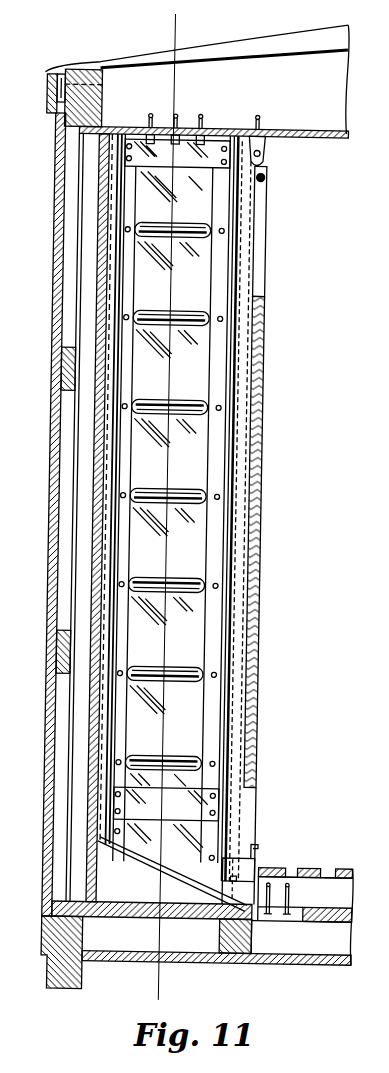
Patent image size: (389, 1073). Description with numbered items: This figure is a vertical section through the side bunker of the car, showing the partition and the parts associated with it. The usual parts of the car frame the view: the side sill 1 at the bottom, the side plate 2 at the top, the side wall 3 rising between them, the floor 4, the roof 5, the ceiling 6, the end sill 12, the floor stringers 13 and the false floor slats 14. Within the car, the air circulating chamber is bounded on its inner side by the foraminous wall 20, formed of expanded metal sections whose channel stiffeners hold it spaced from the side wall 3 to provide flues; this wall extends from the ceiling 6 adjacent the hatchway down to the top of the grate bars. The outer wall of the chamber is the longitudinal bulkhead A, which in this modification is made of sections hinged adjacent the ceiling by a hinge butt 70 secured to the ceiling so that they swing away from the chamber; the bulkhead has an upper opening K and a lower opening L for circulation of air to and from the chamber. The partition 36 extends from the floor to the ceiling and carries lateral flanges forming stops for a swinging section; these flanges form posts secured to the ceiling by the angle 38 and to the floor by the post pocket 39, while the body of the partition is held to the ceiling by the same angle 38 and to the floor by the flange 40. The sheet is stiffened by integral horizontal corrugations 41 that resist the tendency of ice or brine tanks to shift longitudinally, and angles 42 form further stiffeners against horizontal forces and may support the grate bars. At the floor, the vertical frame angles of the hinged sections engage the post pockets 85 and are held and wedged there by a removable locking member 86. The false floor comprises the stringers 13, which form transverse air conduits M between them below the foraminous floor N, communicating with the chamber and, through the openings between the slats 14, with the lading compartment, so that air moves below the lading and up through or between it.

The side sill 1 is at (76, 971).
The side plate 2 is at (65, 121).
The side wall 3 is at (72, 606).
The floor 4 is at (218, 912).
The roof 5 is at (349, 48).
The ceiling 6 is at (351, 136).
The end sill 12 is at (152, 24).
The floor stringers 13 is at (356, 895).
The false floor slats 14 is at (327, 865).
The foraminous wall 20 is at (118, 452).
The partition 36 is at (170, 504).
The angle 38 is at (186, 160).
The post pocket 39 is at (220, 879).
The flange 40 is at (164, 866).
The horizontal corrugations 41 is at (210, 682).
The angles 42 is at (166, 804).
The hinge butt 70 is at (270, 153).
The post pockets 85 is at (255, 865).
The locking member 86 is at (268, 843).
The longitudinal bulkhead A is at (269, 456).
The upper opening K is at (203, 277).
The lower opening L is at (200, 852).
The laterally extending conduits M is at (305, 900).
The foraminous floor N is at (356, 866).